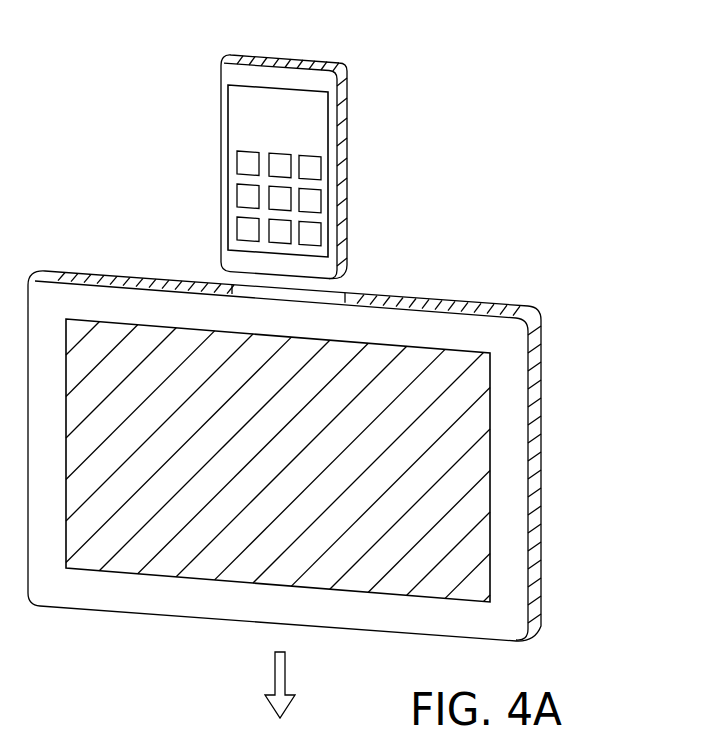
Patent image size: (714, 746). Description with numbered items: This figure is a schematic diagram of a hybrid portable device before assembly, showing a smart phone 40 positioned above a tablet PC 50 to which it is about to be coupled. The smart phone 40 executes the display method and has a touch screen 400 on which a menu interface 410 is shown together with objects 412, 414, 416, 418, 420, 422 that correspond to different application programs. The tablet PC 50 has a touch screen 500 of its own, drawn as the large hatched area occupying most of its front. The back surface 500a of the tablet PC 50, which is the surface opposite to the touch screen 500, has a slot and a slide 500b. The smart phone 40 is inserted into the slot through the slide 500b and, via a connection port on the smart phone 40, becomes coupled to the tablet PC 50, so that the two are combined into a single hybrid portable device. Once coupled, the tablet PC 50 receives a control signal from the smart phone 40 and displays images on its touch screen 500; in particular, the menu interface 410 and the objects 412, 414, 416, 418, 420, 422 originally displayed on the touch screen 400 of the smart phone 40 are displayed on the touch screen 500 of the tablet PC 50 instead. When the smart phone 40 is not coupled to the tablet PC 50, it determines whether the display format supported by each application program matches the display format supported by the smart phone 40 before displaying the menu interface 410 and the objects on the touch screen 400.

The smart phone 40 is at (342, 78).
The touch screen 400 is at (330, 116).
The menu interface 410 is at (304, 110).
The object 412 is at (243, 163).
The object 414 is at (280, 158).
The object 416 is at (315, 165).
The object 418 is at (243, 197).
The object 420 is at (277, 202).
The object 422 is at (315, 200).
The tablet PC 50 is at (482, 308).
The touch screen 500 is at (490, 373).
The back surface 500a is at (348, 300).
The slide 500b is at (244, 283).